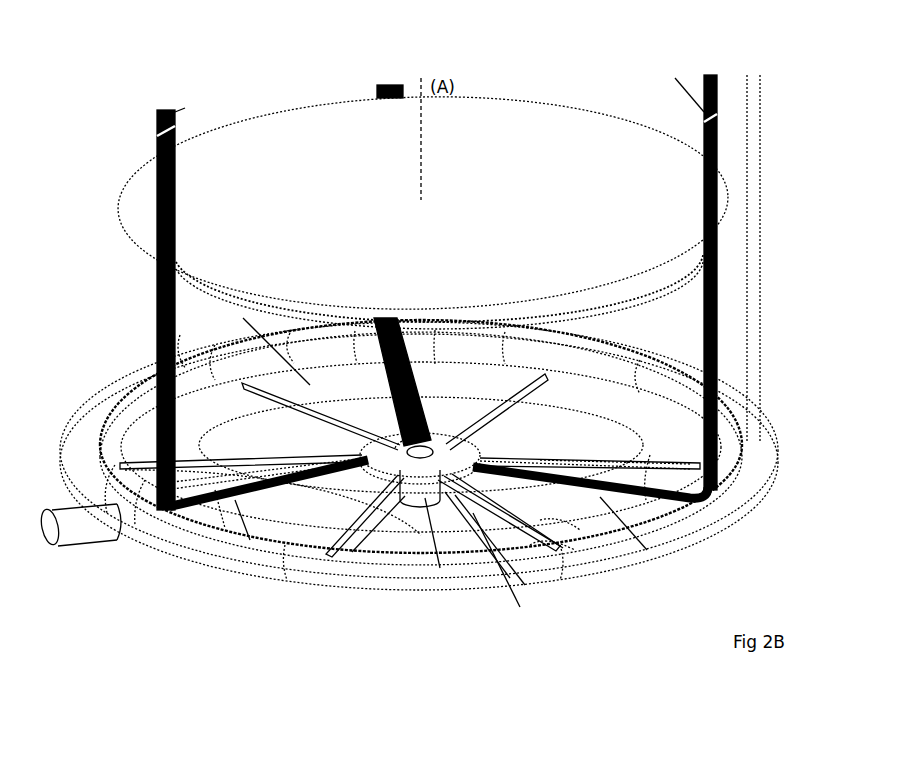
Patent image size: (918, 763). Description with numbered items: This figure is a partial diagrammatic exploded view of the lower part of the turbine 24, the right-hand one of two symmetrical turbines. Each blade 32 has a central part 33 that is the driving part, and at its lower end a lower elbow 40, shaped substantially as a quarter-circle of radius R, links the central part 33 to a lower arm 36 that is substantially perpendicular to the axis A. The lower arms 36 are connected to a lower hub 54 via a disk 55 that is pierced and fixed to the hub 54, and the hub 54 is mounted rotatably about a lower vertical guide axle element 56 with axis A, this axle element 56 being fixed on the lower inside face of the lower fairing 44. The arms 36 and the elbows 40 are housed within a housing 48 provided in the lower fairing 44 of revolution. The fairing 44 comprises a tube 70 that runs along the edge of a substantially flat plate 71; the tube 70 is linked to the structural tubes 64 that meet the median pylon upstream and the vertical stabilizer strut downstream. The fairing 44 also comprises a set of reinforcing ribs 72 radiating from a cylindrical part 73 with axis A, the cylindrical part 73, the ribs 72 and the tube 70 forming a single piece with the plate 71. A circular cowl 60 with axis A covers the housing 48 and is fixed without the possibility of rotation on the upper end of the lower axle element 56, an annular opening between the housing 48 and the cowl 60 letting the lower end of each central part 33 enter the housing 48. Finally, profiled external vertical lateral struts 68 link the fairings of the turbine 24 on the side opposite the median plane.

The turbine 24 is at (165, 605).
The blade 32 is at (372, 92).
The central part of the blade 33 is at (405, 92).
The lower arm 36 is at (652, 588).
The lower elbow 40 is at (560, 330).
The lower fairing 44 is at (352, 592).
The housing 48 is at (236, 520).
The lower hub 54 is at (413, 498).
The disk 55 is at (400, 500).
The lower vertical guide axle element 56 is at (438, 500).
The circular cowl 60 is at (256, 122).
The structural tube 64 is at (190, 345).
The external vertical lateral strut 68 is at (760, 280).
The tube 70 is at (544, 562).
The plate 71 is at (440, 530).
The reinforcing ribs 72 is at (545, 530).
The cylindrical part 73 is at (465, 505).